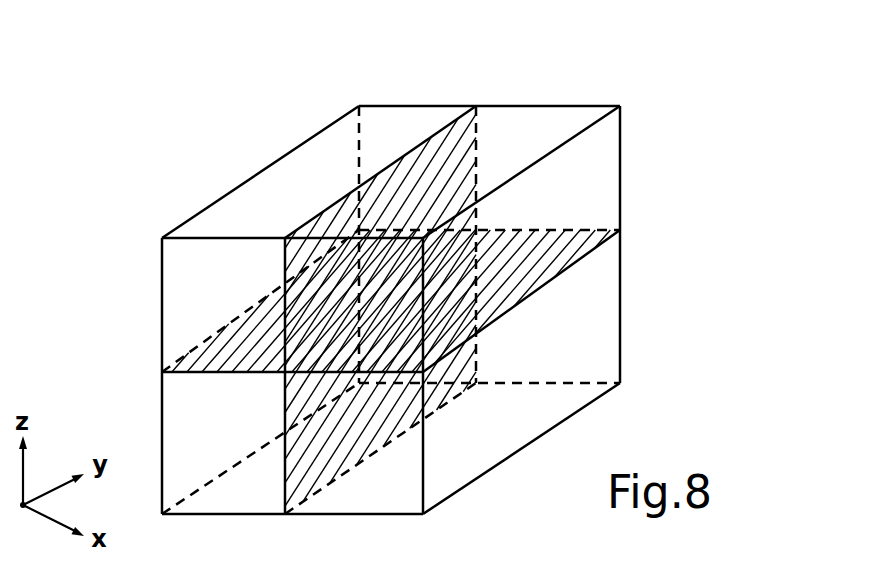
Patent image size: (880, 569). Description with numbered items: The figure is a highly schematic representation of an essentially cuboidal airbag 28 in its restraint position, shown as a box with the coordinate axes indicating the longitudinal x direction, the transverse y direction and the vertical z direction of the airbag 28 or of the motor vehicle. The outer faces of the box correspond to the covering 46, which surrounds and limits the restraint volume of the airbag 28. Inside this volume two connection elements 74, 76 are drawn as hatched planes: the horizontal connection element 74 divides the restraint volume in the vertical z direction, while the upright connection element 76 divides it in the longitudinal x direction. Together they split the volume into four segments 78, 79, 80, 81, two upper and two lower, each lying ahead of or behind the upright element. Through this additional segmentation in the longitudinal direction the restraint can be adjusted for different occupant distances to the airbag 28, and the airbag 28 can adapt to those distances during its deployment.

The airbag 28 is at (622, 74).
The covering 46 is at (378, 106).
The connection element 74 is at (567, 231).
The connection element 76 is at (448, 160).
The segment 78 is at (590, 202).
The segment 79 is at (231, 286).
The segment 80 is at (234, 434).
The segment 81 is at (581, 337).